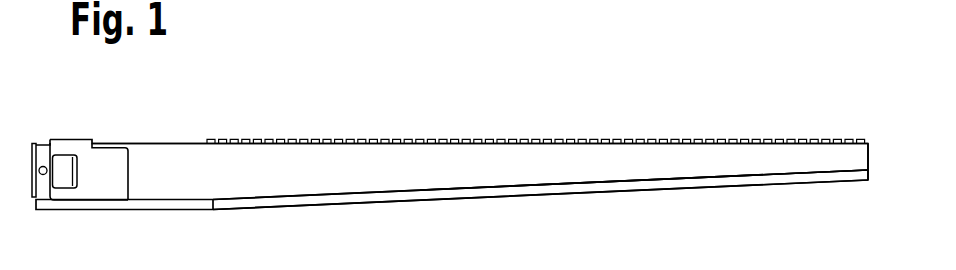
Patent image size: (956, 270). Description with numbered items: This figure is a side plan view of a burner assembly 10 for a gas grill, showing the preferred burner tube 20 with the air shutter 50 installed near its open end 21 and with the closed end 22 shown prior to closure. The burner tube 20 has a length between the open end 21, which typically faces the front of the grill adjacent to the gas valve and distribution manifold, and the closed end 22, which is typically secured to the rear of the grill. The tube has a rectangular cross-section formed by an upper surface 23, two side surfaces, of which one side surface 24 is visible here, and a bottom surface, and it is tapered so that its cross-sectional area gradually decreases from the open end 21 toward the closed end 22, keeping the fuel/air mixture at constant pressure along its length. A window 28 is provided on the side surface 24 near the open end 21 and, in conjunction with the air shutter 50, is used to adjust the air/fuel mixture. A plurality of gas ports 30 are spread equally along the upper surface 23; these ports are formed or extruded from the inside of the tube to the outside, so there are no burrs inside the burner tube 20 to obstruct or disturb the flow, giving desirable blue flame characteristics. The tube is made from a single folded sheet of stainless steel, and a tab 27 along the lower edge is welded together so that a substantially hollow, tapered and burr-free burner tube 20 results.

The burner assembly 10 is at (347, 116).
The burner tube 20 is at (295, 178).
The open end 21 is at (32, 186).
The closed end 22 is at (868, 160).
The upper surface 23 is at (181, 142).
The side surface 24 is at (505, 165).
The tab 27 is at (397, 198).
The window 28 is at (65, 180).
The gas ports 30 is at (461, 138).
The air shutter 50 is at (83, 131).